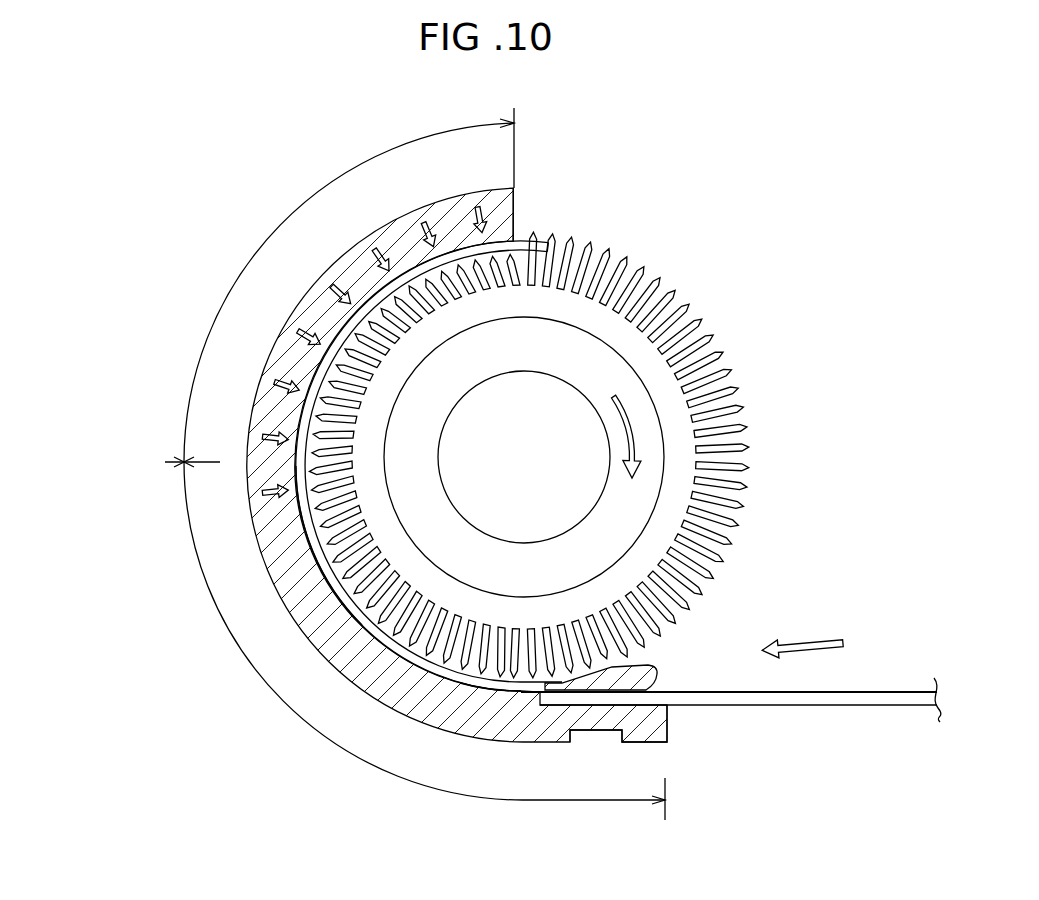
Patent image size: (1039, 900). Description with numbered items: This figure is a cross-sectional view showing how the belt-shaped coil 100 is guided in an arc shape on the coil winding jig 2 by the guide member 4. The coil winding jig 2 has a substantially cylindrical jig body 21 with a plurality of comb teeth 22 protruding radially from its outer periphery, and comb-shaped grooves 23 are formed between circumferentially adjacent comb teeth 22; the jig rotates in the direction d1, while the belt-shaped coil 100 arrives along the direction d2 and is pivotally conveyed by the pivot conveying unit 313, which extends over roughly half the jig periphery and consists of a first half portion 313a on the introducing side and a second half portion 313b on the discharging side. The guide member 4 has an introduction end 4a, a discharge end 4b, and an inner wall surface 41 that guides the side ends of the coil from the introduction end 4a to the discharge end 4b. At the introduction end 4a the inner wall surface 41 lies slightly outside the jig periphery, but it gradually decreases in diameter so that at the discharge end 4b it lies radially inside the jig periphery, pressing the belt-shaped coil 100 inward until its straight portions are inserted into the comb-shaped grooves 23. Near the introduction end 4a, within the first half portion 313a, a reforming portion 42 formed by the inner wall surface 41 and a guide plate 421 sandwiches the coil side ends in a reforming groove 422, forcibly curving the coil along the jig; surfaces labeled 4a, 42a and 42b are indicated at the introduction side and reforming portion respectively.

The coil winding jig 2 is at (750, 290).
The jig body 21 is at (567, 340).
The comb teeth 22 is at (735, 389).
The comb-shaped grooves 23 is at (743, 437).
The guide member 4 is at (353, 221).
The introduction end 4a is at (668, 718).
The discharge end 4b is at (513, 213).
The inner wall surface 41 is at (348, 322).
The reforming portion 42 is at (497, 657).
The guide surface of guide portion 42a is at (618, 723).
The inner surface of guide portion 42b is at (292, 588).
The guide plate 421 is at (653, 669).
The reforming groove 422 is at (518, 695).
The belt-shaped coil 100 is at (903, 705).
The pivot conveying unit 313 is at (88, 405).
The first half portion 313a is at (181, 531).
The second half portion 313b is at (184, 392).
The direction d1 is at (619, 422).
The direction d2 is at (823, 641).